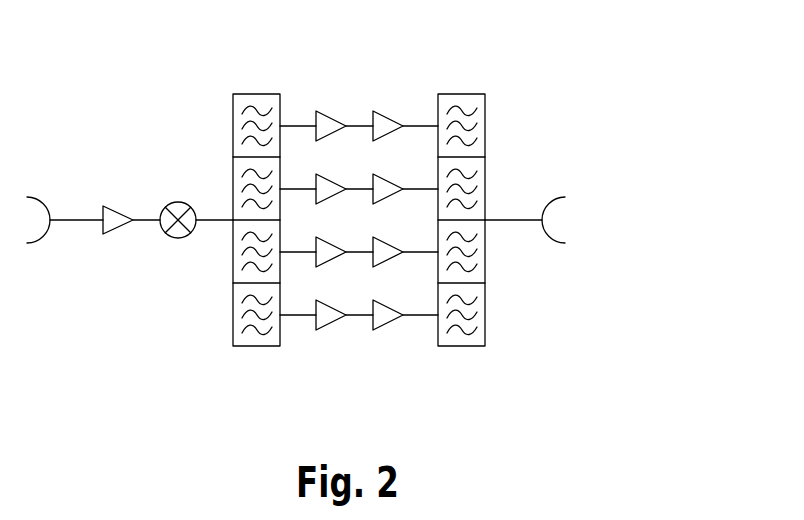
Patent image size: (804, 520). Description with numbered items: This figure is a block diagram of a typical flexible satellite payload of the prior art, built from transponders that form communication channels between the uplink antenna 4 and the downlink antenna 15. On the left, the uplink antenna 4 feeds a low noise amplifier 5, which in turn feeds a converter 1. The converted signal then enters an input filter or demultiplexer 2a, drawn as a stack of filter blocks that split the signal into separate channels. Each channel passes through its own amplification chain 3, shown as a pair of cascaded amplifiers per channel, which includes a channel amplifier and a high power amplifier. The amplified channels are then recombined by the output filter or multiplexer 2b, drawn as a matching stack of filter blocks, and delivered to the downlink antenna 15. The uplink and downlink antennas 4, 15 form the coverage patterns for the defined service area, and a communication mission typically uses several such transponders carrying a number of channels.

The uplink antenna 4 is at (44, 202).
The low noise amplifier 5 is at (116, 205).
The converter 1 is at (176, 204).
The input filter 2a is at (252, 94).
The output filter 2b is at (468, 94).
The amplification chain 3 is at (349, 83).
The downlink antenna 15 is at (561, 198).